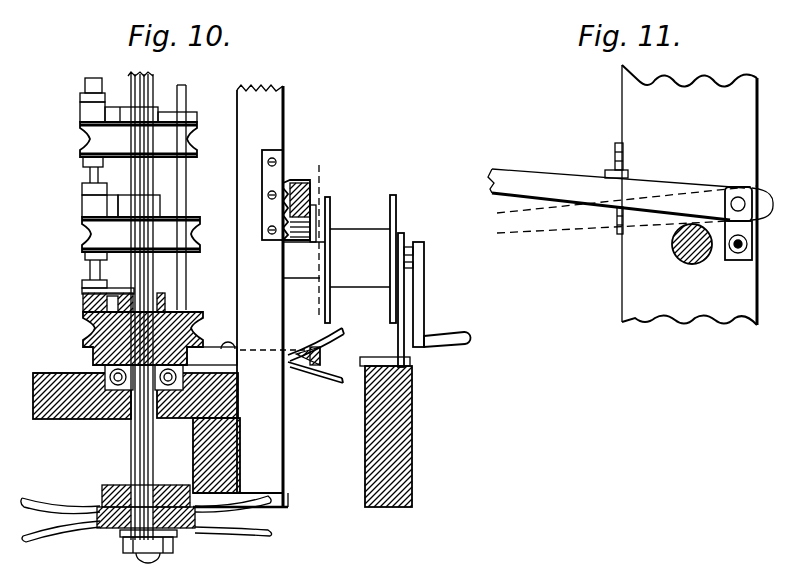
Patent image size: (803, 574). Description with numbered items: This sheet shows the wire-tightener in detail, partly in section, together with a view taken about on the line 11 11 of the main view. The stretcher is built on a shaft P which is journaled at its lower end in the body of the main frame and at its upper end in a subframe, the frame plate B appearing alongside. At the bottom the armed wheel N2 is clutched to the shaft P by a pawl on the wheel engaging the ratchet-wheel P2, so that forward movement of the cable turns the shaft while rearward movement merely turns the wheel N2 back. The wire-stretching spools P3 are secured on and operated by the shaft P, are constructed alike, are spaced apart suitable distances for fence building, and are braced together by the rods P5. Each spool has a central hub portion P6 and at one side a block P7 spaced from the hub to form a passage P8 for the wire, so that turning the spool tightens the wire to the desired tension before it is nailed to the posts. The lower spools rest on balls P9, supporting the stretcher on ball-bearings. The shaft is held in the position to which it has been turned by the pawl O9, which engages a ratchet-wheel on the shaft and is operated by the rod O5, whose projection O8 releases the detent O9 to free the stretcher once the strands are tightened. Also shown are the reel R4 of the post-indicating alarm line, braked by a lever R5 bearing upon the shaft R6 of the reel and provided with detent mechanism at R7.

In FIG. 10, the frame plate B is at (284, 440).
In FIG. 10, the shaft P is at (145, 452).
In FIG. 10, the ratchet-wheel P2 is at (126, 478).
In FIG. 10, the wire-stretching spools P3 is at (88, 238).
In FIG. 10, the rods P5 is at (184, 202).
In FIG. 10, the central hub portion P6 is at (160, 118).
In FIG. 10, the block P7 is at (92, 208).
In FIG. 10, the passage P8 is at (103, 115).
In FIG. 10, the balls P9 is at (190, 343).
In FIG. 10, the armed wheel N2 is at (77, 497).
In FIG. 10, the rod O5 is at (311, 364).
In FIG. 10, the projection O8 is at (322, 352).
In FIG. 10, the pawl O9 is at (232, 355).
In FIG. 10, the section line 11 is at (317, 234).
In FIG. 10, the reel R4 is at (348, 240).
In FIG. 10, the lever R5 is at (308, 200).
In FIG. 11, the lever R5 is at (548, 178).
In FIG. 11, the shaft R6 is at (672, 245).
In FIG. 10, the detent mechanism R7 is at (286, 182).
In FIG. 11, the detent mechanism R7 is at (607, 172).